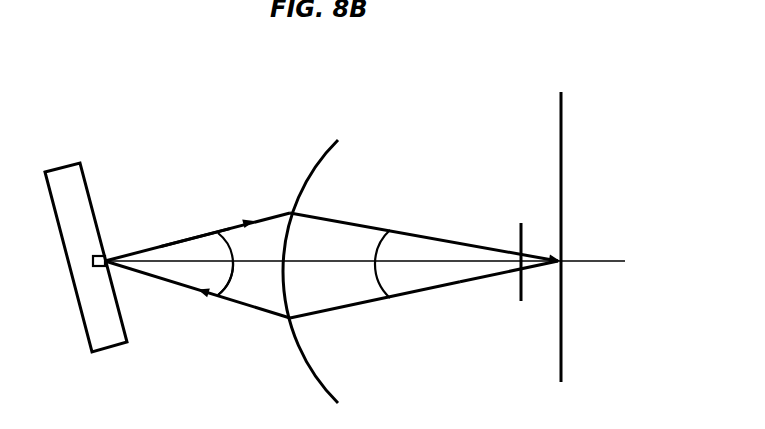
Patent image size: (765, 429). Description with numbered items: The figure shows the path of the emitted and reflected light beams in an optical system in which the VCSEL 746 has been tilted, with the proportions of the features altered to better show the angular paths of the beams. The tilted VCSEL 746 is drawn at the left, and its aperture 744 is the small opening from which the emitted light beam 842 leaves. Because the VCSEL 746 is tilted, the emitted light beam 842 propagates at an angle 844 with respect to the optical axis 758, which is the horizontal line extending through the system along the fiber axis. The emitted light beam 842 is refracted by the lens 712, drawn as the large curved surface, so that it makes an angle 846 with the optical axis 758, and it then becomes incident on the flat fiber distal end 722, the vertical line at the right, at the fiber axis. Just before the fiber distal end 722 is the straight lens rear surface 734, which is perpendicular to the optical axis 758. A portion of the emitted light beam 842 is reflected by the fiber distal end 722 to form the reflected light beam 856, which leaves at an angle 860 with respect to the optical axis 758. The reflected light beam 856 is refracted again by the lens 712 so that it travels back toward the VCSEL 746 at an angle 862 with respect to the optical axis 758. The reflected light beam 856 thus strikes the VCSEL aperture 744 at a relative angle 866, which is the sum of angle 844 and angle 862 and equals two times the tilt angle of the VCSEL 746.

The VCSEL 746 is at (63, 177).
The aperture 744 is at (115, 270).
The optical axis 758 is at (178, 255).
The emitted light beam 842 is at (137, 247).
The angle 844 is at (188, 248).
The angle 862 is at (180, 273).
The relative angle 866 is at (233, 280).
The lens 712 is at (320, 163).
The angle 846 is at (422, 247).
The angle 860 is at (420, 285).
The reflected light beam 856 is at (502, 278).
The lens rear surface 734 is at (517, 243).
The fiber distal end 722 is at (548, 205).